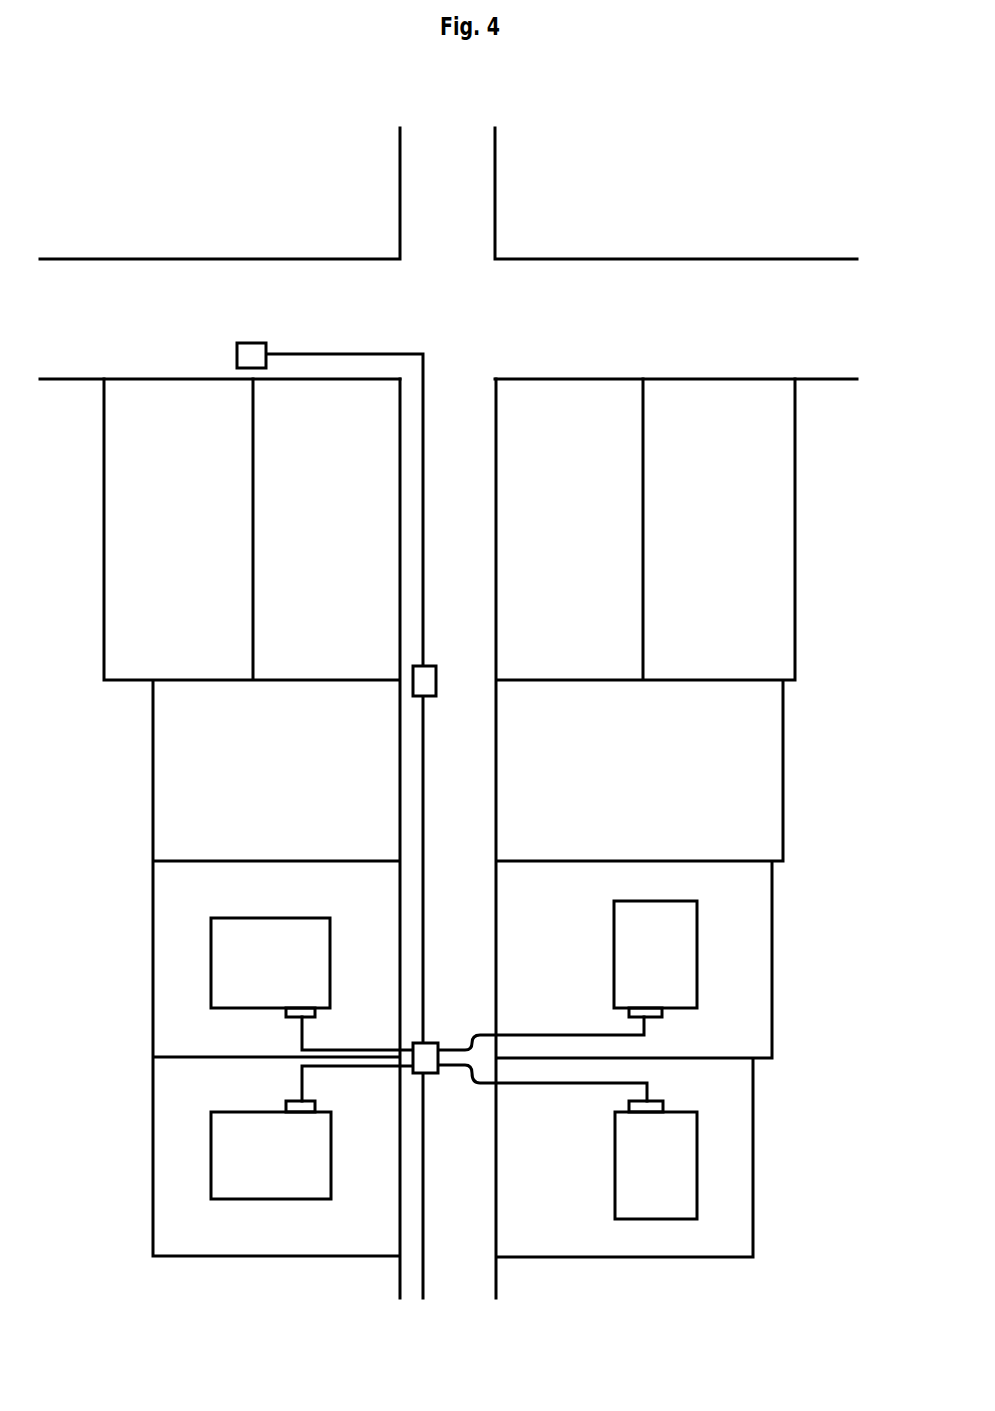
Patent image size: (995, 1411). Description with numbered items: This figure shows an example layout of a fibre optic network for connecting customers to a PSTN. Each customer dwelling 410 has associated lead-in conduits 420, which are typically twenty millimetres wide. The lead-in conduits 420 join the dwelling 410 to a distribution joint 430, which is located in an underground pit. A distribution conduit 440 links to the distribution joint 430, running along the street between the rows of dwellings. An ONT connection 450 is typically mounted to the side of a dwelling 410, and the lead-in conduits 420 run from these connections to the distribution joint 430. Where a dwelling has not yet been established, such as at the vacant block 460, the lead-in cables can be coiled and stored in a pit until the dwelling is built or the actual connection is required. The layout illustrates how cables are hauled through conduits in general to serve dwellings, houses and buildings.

The customer dwelling 410 is at (247, 1212).
The lead-in conduit 420 is at (348, 1039).
The distribution joint 430 is at (432, 1091).
The distribution conduit 440 is at (433, 1287).
The ONT connection 450 is at (627, 1014).
The vacant block 460 is at (712, 489).